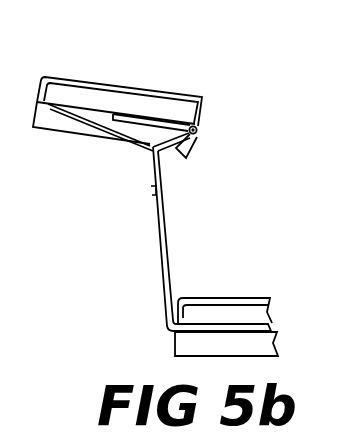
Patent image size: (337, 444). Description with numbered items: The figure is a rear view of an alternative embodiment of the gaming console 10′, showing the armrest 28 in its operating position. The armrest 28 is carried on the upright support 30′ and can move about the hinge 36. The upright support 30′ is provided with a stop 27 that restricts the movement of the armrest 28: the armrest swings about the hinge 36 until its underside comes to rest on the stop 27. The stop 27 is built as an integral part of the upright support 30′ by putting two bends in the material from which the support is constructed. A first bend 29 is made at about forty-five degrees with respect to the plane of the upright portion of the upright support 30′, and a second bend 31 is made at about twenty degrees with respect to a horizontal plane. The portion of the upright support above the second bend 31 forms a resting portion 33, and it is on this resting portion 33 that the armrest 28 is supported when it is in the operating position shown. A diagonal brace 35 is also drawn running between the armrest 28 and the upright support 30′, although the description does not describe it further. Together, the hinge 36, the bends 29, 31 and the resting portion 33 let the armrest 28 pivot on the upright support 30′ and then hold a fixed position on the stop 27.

The gaming console 10′ is at (132, 270).
The stop 27 is at (208, 114).
The armrest 28 is at (102, 92).
The first bend 29 is at (156, 150).
The upright support 30′ is at (162, 227).
The second bend 31 is at (153, 143).
The resting portion 33 is at (140, 117).
The brace 35 is at (112, 154).
The hinge 36 is at (199, 128).